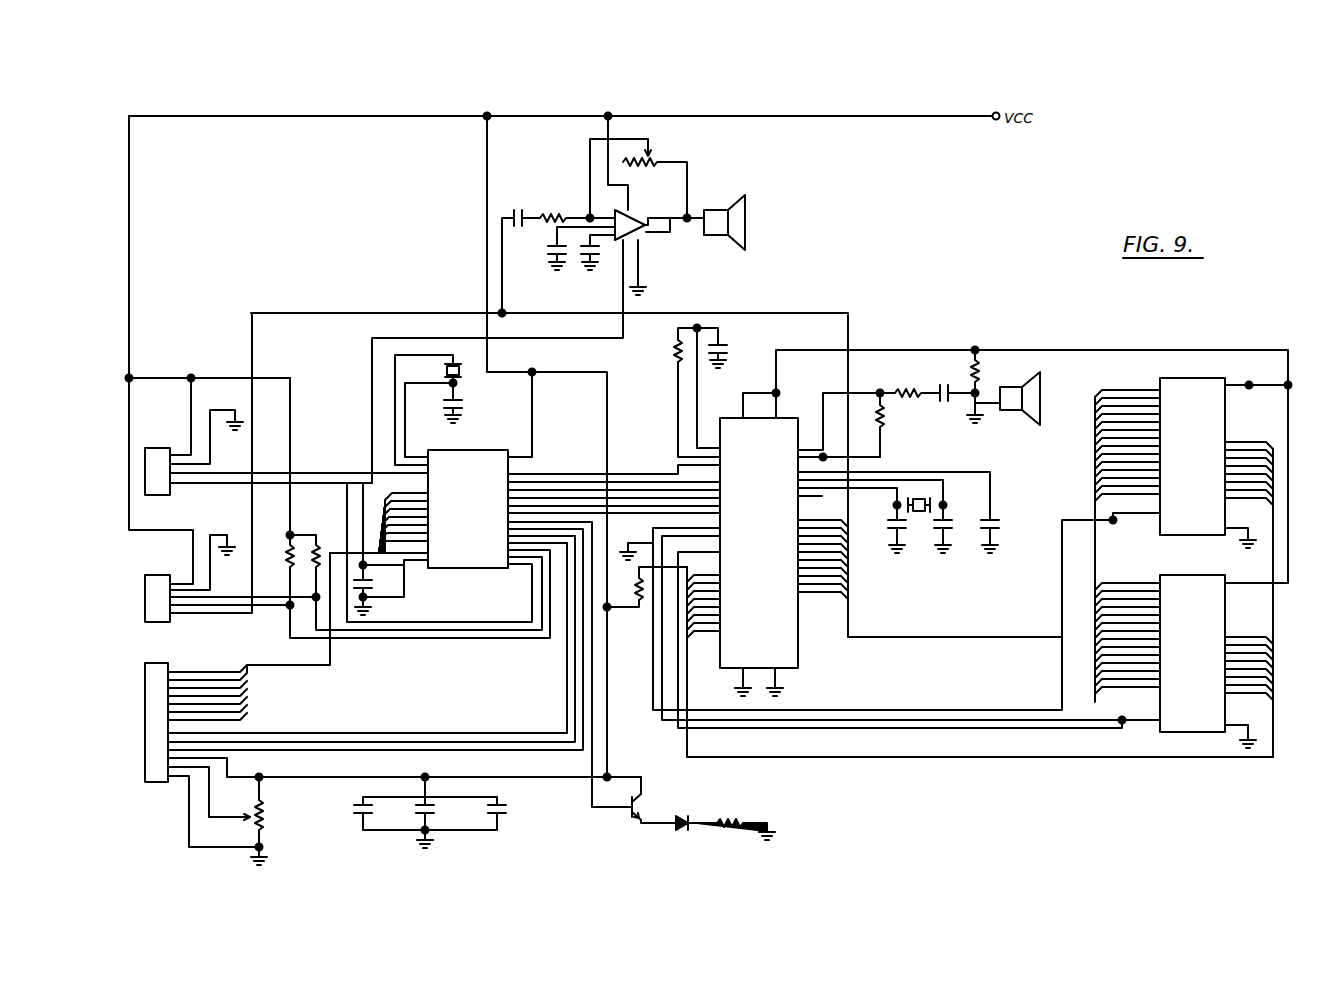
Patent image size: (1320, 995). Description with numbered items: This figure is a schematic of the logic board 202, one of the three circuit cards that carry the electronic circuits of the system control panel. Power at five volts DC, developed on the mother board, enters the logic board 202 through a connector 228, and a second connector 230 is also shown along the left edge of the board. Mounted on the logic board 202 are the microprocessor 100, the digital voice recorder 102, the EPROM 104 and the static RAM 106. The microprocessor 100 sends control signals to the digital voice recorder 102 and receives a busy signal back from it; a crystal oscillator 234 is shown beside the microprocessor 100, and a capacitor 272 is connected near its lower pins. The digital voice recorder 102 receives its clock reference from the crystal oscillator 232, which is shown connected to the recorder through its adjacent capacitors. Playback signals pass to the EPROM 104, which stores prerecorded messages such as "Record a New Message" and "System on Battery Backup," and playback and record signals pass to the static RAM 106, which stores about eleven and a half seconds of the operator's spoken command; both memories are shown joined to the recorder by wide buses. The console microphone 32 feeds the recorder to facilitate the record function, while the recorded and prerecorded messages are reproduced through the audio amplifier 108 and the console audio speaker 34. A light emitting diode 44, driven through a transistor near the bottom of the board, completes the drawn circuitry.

The logic board 202 is at (427, 106).
The console audio speaker 34 is at (745, 216).
The audio amplifier 108 is at (638, 233).
The crystal oscillator 234 is at (465, 376).
The microprocessor 100 is at (484, 568).
The capacitor 272 is at (378, 581).
The connector 228 is at (145, 597).
The connector 230 is at (145, 726).
The digital voice recorder 102 is at (786, 655).
The crystal oscillator 232 is at (919, 519).
The console microphone 32 is at (1041, 400).
The EPROM 104 is at (1167, 380).
The static RAM 106 is at (1177, 583).
The light emitting diode 44 is at (725, 821).